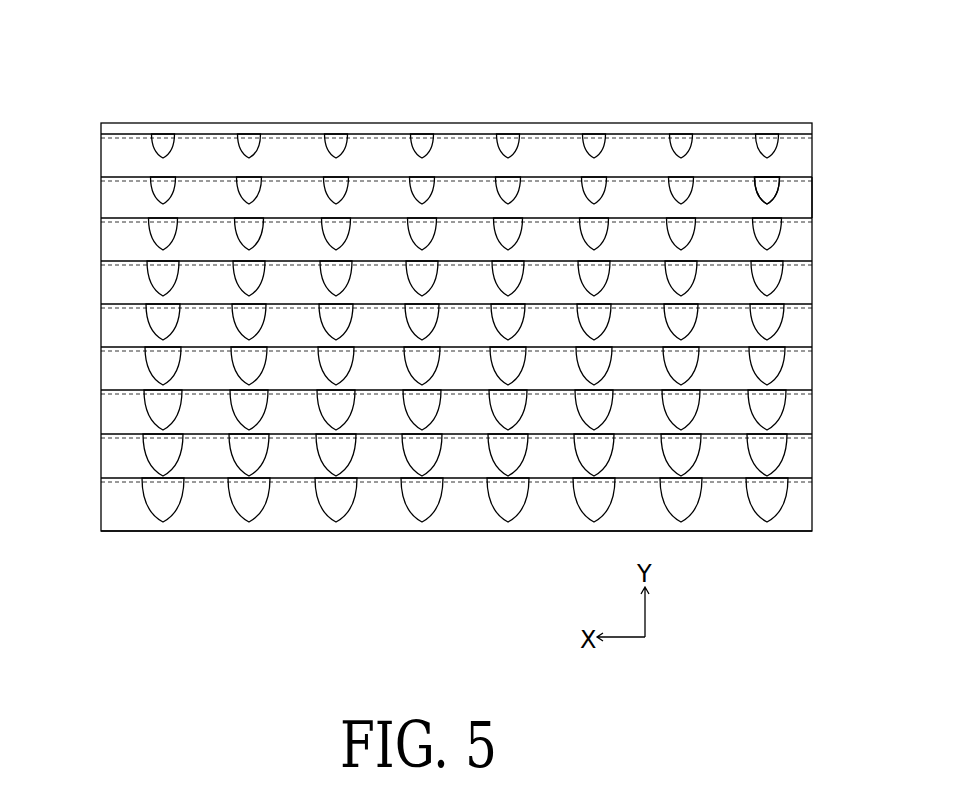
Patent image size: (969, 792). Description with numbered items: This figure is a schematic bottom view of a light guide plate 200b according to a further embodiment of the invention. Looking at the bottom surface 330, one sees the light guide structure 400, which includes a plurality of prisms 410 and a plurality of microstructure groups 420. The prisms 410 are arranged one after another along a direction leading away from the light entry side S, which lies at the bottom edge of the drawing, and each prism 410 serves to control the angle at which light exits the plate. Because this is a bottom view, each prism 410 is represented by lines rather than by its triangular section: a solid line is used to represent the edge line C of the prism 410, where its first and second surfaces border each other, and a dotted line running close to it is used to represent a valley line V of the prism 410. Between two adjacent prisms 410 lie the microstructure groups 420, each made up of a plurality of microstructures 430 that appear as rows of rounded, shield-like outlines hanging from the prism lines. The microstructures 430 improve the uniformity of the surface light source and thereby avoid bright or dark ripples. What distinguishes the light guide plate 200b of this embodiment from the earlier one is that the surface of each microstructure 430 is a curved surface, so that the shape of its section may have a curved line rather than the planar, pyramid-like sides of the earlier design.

The light guide plate 200b is at (120, 24).
The bottom surface 330 is at (714, 130).
The light guide structure 400 is at (424, 362).
The prism 410 is at (108, 372).
The microstructure group 420 is at (465, 380).
The microstructure 430 is at (176, 146).
The edge line C is at (792, 181).
The valley line V is at (792, 195).
The light entry side S is at (440, 549).